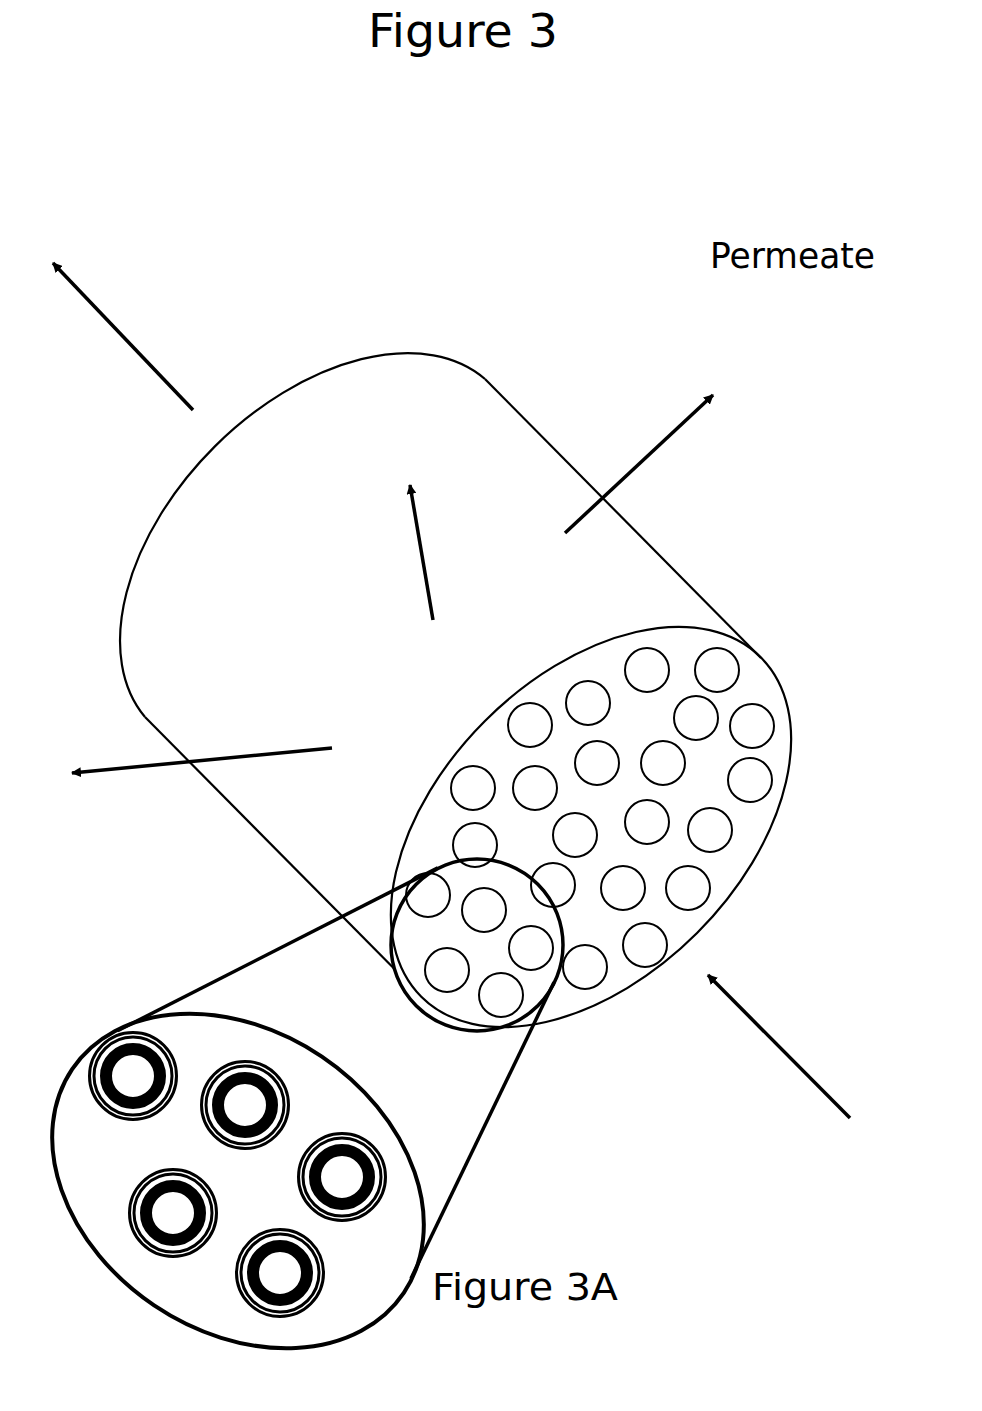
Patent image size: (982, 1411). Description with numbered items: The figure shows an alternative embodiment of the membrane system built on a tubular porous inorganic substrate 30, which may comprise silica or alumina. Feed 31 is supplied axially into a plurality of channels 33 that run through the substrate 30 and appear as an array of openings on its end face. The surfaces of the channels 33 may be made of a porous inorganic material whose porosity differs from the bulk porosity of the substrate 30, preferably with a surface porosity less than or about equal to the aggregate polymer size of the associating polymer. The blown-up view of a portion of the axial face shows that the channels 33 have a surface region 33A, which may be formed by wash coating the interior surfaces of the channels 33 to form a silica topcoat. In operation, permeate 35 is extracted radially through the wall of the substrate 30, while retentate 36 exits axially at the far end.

In FIG. 3, the porous inorganic substrate 30 is at (270, 853).
In FIG. 3, the feed 31 is at (781, 1047).
In FIG. 3, the channels 33 is at (723, 668).
In FIG. 3A, the channels 33 is at (382, 1187).
In FIG. 3A, the surface region 33A is at (382, 1155).
In FIG. 3, the permeate 35 is at (592, 503).
In FIG. 3, the retentate 36 is at (166, 336).